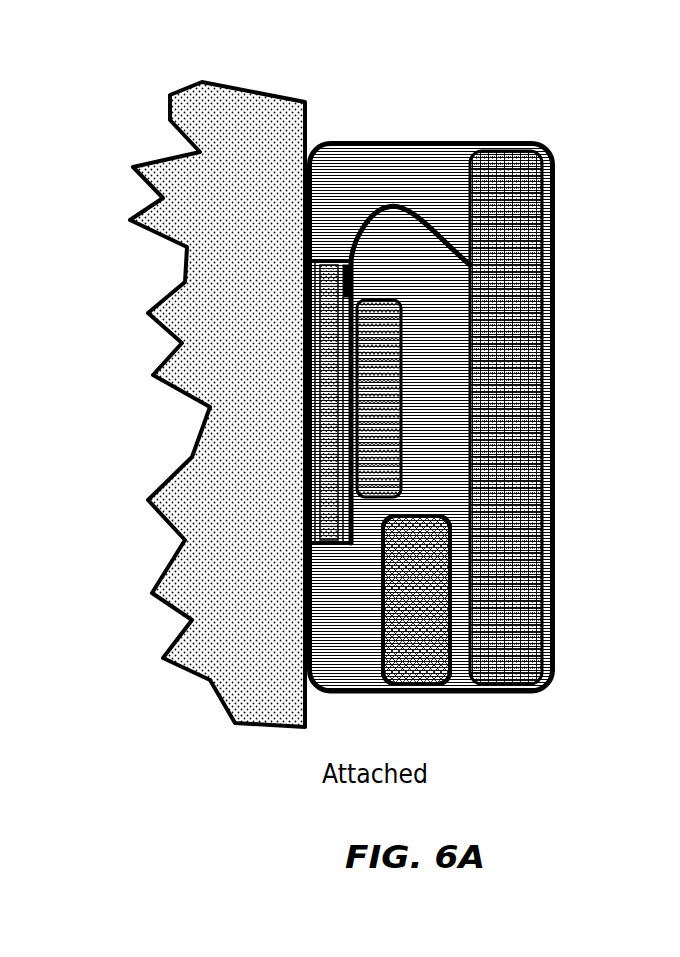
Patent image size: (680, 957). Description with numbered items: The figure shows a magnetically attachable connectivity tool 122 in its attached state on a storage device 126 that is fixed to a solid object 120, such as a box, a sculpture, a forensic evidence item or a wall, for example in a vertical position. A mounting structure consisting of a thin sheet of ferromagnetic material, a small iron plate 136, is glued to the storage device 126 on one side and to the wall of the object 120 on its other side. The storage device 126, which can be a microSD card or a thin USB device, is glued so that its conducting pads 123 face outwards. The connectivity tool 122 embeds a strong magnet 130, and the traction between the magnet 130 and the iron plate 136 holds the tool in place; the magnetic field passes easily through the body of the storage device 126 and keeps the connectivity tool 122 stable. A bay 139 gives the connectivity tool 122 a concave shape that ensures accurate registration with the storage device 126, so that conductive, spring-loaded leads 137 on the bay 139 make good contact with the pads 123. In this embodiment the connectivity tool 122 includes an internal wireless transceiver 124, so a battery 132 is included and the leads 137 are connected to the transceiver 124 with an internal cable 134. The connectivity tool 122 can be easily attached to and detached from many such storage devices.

The object 120 is at (212, 210).
The connectivity tool 122 is at (383, 138).
The conducting pads 123 is at (343, 295).
The wireless transceiver 124 is at (490, 310).
The storage device 126 is at (322, 418).
The magnet 130 is at (383, 482).
The battery 132 is at (407, 570).
The internal cable 134 is at (403, 205).
The iron plate 136 is at (322, 265).
The conductive leads 137 is at (322, 300).
The bay 139 is at (345, 406).